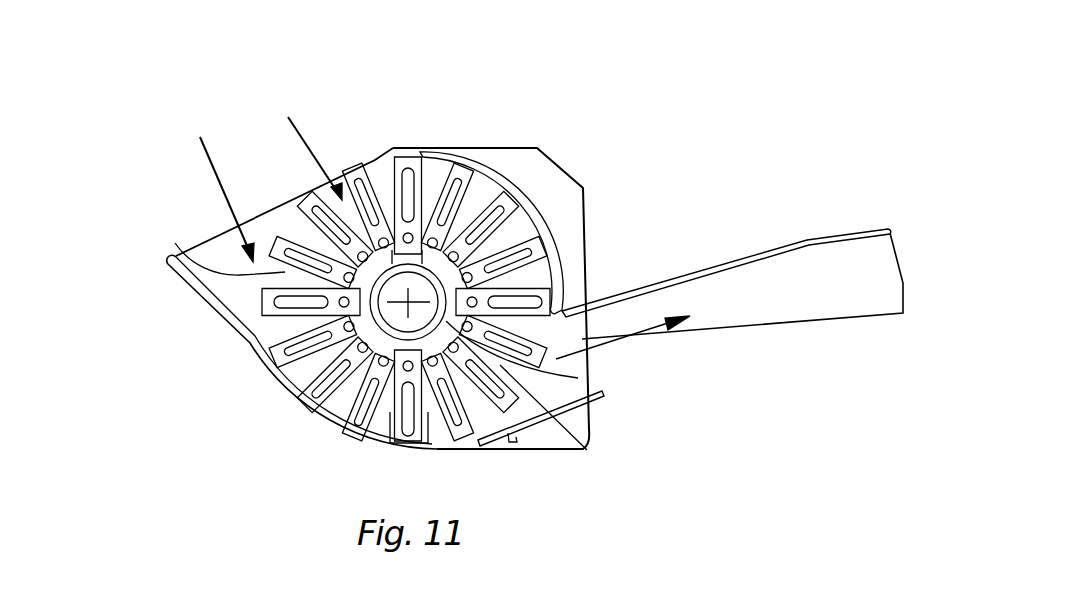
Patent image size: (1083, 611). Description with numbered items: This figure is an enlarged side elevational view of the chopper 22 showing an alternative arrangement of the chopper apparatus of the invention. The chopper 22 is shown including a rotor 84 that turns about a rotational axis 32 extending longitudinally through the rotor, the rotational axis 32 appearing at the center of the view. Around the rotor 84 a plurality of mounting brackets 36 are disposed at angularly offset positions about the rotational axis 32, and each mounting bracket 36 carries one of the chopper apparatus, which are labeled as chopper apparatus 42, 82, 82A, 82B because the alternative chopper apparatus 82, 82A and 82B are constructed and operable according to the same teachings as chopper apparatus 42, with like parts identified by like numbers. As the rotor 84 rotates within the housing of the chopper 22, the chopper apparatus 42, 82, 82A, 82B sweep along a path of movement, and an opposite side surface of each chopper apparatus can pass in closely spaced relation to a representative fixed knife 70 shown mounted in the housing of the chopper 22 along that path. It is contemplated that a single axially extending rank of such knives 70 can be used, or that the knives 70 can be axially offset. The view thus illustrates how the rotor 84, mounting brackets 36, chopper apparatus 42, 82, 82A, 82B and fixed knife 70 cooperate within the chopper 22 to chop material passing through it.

The chopper 22 is at (586, 186).
The rotational axis 32 is at (578, 378).
The mounting brackets 36 is at (380, 240).
The chopper apparatus 42 is at (410, 157).
The chopper apparatus 82 is at (480, 200).
The chopper apparatus 82A is at (540, 300).
The chopper apparatus 82B is at (587, 450).
The rotor 84 is at (478, 218).
The fixed knife 70 is at (412, 445).